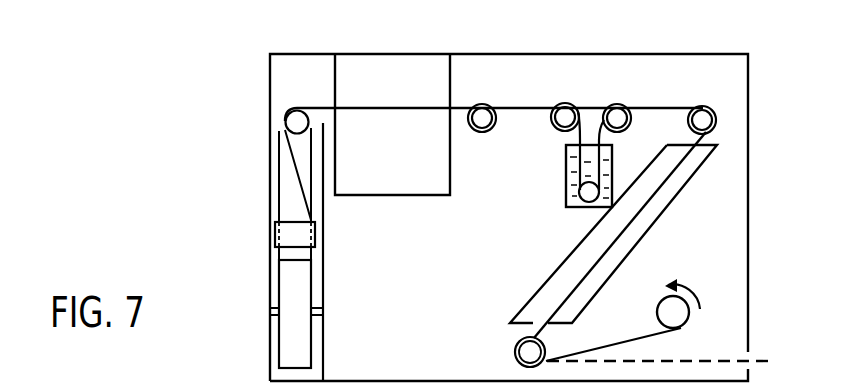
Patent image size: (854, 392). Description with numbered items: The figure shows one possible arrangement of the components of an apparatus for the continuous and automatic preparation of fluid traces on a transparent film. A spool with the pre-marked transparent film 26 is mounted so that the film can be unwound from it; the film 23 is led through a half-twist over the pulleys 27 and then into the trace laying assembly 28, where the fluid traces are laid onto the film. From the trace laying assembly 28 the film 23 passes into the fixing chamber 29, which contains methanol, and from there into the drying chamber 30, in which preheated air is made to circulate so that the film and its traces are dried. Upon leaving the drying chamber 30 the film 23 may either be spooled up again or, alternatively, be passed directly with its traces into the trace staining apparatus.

The film 23 is at (289, 191).
The spool with pre-marked transparent film 26 is at (293, 327).
The pulleys 27 is at (284, 127).
The trace laying assembly 28 is at (392, 80).
The fixing chamber 29 is at (570, 157).
The drying chamber 30 is at (652, 211).